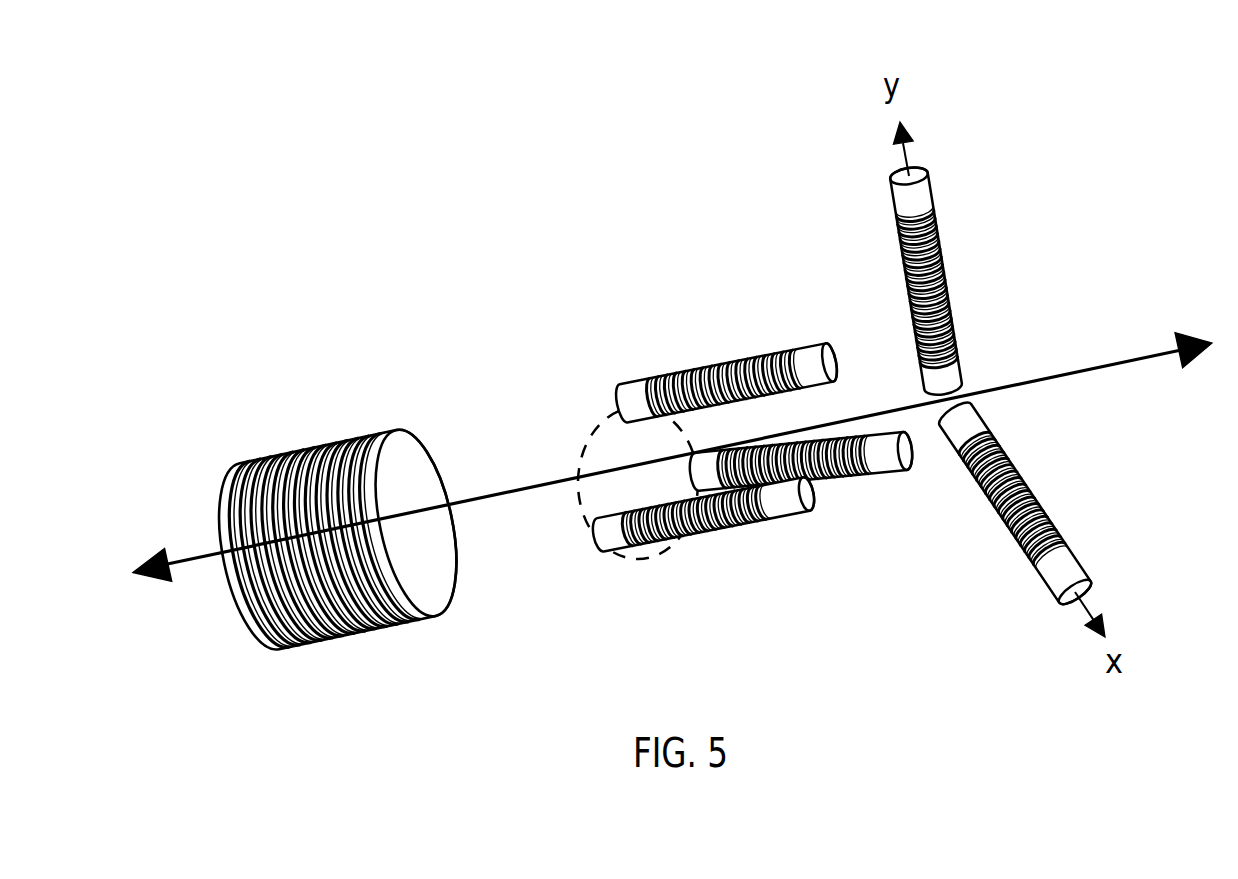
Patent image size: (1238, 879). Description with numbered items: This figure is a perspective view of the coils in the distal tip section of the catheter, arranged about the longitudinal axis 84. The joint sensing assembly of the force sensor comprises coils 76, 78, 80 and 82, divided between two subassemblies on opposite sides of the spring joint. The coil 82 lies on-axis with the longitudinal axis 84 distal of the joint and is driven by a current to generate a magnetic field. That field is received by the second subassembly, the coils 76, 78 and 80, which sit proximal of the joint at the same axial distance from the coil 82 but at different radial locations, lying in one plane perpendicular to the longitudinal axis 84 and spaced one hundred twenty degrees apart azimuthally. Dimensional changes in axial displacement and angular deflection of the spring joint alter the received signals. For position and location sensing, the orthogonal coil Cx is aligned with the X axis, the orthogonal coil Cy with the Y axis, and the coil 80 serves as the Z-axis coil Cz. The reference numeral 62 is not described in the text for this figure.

The coil assembly 62 is at (504, 594).
The coil 76 is at (633, 380).
The coil 78 is at (657, 550).
The coil 80 is at (885, 475).
The coil 82 is at (313, 443).
The longitudinal axis 84 is at (1072, 372).
The orthogonal coil Cy is at (938, 218).
The orthogonal coil Cx is at (1027, 485).